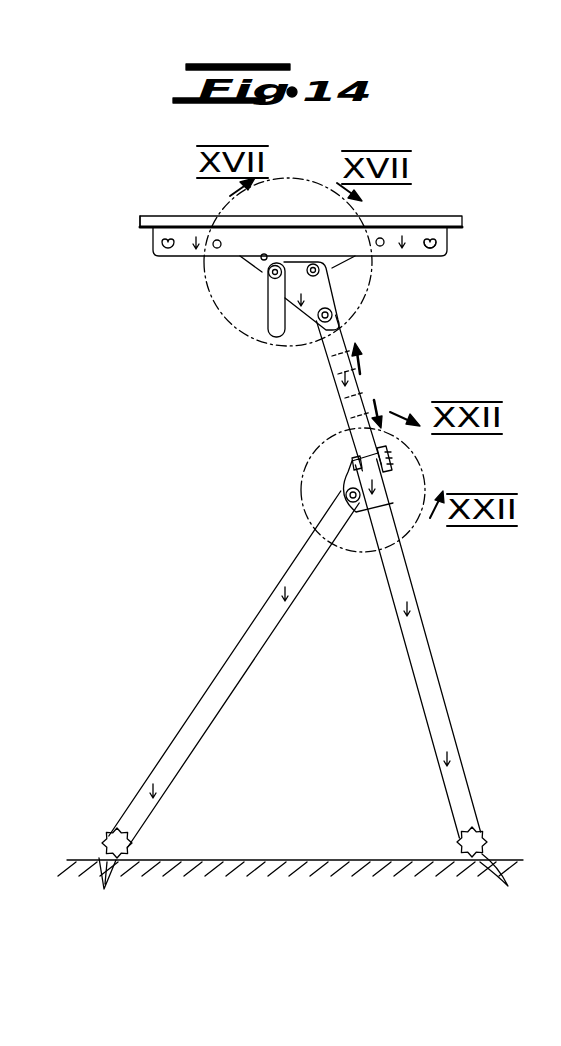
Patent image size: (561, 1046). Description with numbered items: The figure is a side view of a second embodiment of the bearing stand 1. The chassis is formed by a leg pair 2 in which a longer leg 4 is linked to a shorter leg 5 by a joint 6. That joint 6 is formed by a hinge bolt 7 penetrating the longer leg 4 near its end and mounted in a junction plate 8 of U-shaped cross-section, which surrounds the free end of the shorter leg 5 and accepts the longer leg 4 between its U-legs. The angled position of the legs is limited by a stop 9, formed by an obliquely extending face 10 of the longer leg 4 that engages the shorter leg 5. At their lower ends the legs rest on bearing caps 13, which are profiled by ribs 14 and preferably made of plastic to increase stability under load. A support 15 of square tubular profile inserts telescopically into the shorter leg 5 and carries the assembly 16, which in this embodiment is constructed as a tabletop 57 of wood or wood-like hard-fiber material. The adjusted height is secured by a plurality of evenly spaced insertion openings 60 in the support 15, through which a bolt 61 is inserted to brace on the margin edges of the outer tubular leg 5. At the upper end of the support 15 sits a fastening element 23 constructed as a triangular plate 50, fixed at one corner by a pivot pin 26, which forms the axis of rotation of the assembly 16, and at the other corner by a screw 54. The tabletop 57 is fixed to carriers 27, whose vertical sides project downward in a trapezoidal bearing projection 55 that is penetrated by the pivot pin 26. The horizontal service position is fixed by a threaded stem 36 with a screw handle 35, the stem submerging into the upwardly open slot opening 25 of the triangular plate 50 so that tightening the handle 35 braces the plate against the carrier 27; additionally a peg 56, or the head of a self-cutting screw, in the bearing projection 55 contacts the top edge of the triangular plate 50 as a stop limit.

The bearing stand 1 is at (110, 251).
The leg pair 2 is at (152, 695).
The longer leg 4 is at (240, 652).
The shorter leg 5 is at (428, 672).
The joint 6 is at (354, 538).
The hinge bolt 7 is at (347, 508).
The junction plate 8 is at (346, 489).
The stop 9 is at (370, 497).
The obliquely extending face 10 is at (350, 470).
The bearing cap 13 is at (112, 840).
The rib 14 is at (302, 887).
The support 15 is at (355, 380).
The assembly 16 is at (442, 203).
The fastening element 23 is at (337, 308).
The slot opening 25 is at (276, 264).
The pivot pin 26 is at (313, 263).
The carrier 27 is at (400, 252).
The screw handle 35 is at (276, 313).
The threaded stem 36 is at (258, 270).
The triangular plate 50 is at (312, 318).
The screw 54 is at (327, 321).
The bearing projection 55 is at (334, 270).
The peg 56 is at (260, 254).
The tabletop 57 is at (148, 220).
The insertion opening 60 is at (340, 362).
The bolt 61 is at (386, 450).